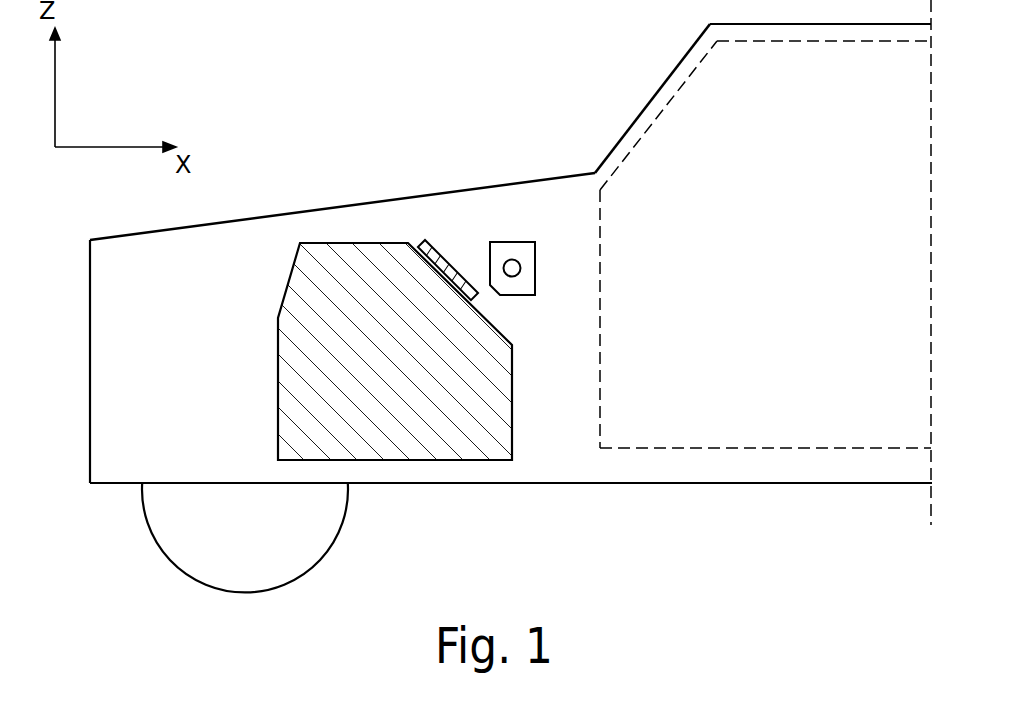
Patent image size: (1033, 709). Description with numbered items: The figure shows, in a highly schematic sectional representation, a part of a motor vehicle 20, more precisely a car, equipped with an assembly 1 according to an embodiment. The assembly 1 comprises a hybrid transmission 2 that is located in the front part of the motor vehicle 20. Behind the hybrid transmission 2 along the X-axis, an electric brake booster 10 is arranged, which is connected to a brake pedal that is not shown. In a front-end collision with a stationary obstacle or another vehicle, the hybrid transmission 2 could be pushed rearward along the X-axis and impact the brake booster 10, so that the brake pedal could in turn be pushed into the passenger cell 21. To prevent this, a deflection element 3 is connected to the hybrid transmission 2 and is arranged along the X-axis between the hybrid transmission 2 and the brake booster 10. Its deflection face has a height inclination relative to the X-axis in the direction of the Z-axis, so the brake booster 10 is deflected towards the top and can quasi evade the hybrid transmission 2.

The assembly 1 is at (424, 205).
The hybrid transmission 2 is at (397, 367).
The deflection element 3 is at (468, 272).
The electric brake booster 10 is at (523, 241).
The motor vehicle 20 is at (318, 207).
The passenger cell 21 is at (691, 78).